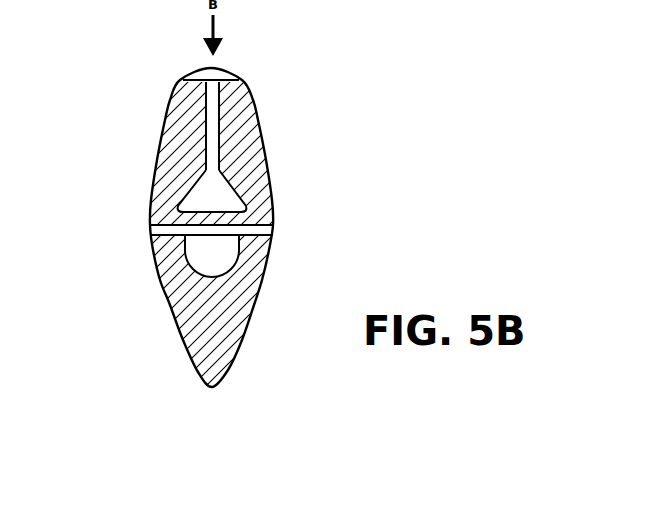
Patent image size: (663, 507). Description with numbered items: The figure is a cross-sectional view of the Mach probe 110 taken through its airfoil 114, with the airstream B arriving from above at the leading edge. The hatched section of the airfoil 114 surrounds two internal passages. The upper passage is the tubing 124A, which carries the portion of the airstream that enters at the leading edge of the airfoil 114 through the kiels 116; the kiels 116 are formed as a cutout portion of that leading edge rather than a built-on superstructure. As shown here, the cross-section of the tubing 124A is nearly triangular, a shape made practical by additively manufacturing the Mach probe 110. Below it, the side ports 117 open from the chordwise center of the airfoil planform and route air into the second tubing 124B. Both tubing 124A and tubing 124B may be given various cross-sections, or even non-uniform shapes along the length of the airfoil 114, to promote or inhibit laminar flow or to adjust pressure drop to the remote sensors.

The Mach probe 110 is at (465, 213).
The airfoil 114 is at (118, 280).
The kiels 116 is at (212, 139).
The side ports 117 is at (250, 232).
The tubing 124A is at (224, 204).
The second tubing 124B is at (216, 267).